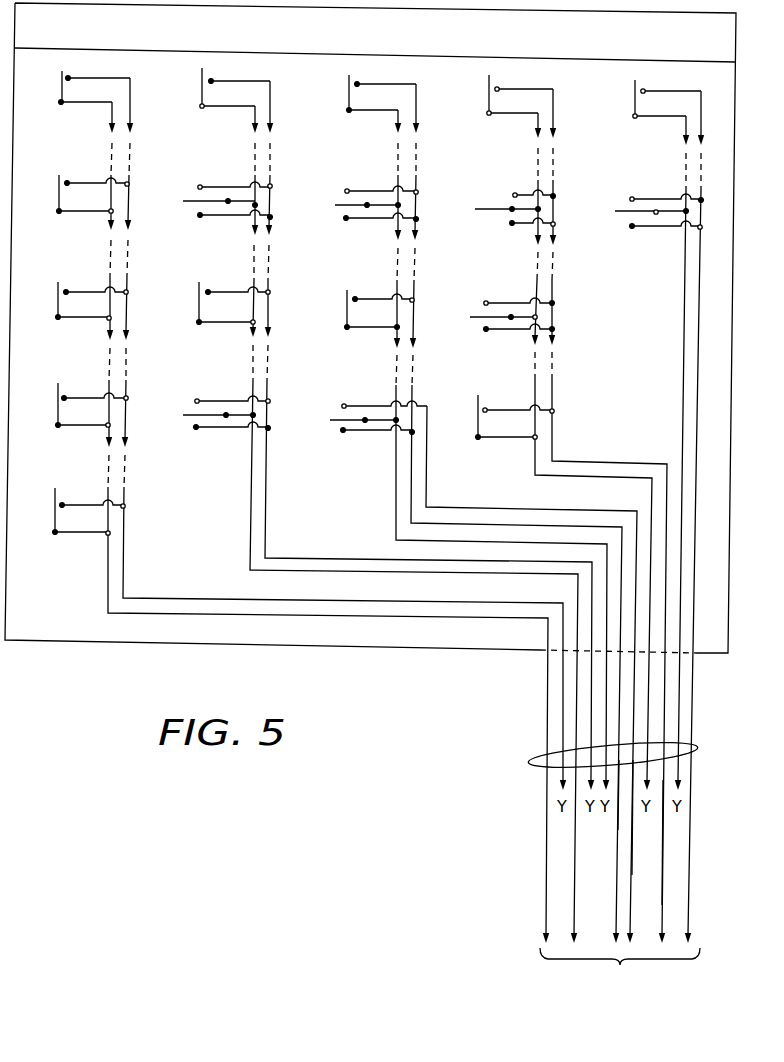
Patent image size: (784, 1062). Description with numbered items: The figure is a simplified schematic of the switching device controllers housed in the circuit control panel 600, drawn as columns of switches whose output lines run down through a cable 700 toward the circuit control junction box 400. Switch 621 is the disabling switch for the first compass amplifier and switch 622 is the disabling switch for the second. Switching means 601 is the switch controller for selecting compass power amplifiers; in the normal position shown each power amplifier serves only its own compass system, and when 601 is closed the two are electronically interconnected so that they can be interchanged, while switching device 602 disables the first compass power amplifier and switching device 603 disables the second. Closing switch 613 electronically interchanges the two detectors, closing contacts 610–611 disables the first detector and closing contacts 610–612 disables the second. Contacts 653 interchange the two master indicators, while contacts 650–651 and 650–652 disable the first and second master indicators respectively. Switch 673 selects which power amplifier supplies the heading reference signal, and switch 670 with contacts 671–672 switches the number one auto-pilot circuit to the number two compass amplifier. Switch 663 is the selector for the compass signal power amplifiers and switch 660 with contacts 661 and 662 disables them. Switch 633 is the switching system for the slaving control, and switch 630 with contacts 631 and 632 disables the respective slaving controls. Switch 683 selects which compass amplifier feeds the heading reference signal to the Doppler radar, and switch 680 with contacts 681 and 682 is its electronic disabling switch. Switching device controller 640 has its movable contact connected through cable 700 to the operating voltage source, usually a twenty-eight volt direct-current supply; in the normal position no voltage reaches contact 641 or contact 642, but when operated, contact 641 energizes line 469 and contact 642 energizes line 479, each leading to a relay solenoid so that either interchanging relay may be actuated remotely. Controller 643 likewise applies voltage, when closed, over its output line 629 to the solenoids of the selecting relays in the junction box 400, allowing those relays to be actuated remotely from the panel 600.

The circuit control panel 600 is at (117, 643).
The switching means 601 is at (59, 305).
The switching device 602 is at (59, 412).
The switching device 603 is at (56, 520).
The detector disabling switch 610 is at (193, 195).
The contact 611 is at (201, 186).
The contact 612 is at (201, 216).
The switch 613 is at (204, 93).
The disabling switch 621 is at (63, 91).
The disabling switch 622 is at (60, 195).
The slaving control disabling switch 630 is at (480, 200).
The contact 631 is at (514, 194).
The contact 632 is at (512, 224).
The slaving control switch 633 is at (491, 102).
The switching device controller 640 is at (336, 414).
The contact 641 is at (344, 431).
The contact 642 is at (345, 404).
The switching device controller 643 is at (480, 421).
The master indicator disabling switch 650 is at (185, 410).
The contact 651 is at (198, 399).
The contact 652 is at (197, 428).
The contacts 653 is at (201, 307).
The signal power amplifier disabling switch 660 is at (477, 309).
The contact 661 is at (487, 302).
The contact 662 is at (487, 330).
The selector switch 663 is at (349, 313).
The switch 670 is at (339, 197).
The contact 671 is at (348, 190).
The contact 672 is at (347, 219).
The switch 673 is at (351, 100).
The disabling switch 680 is at (627, 208).
The contact 681 is at (633, 198).
The contact 682 is at (633, 227).
The selector switch 683 is at (637, 108).
The cable 700 is at (537, 763).
The line 469 is at (617, 822).
The line 479 is at (645, 861).
The conductor 629 is at (662, 898).
The circuit control junction box 400 is at (619, 1000).